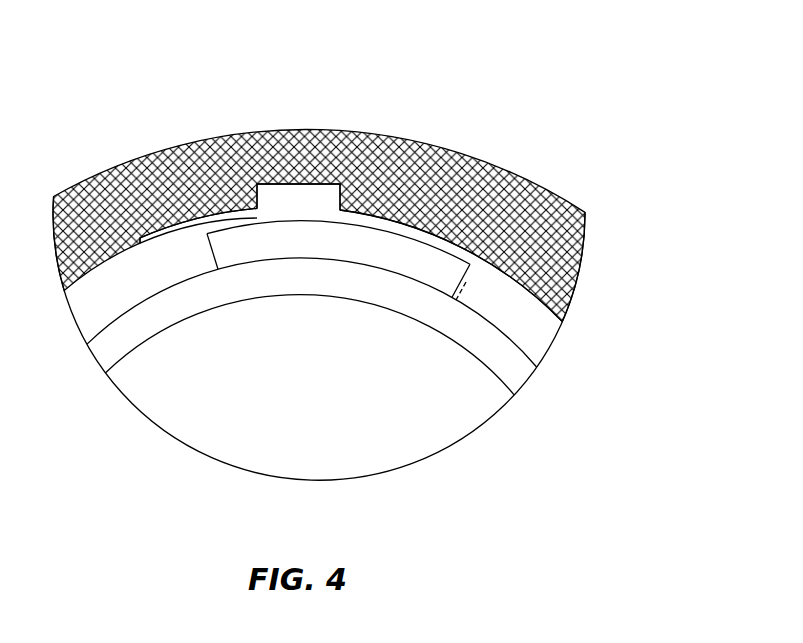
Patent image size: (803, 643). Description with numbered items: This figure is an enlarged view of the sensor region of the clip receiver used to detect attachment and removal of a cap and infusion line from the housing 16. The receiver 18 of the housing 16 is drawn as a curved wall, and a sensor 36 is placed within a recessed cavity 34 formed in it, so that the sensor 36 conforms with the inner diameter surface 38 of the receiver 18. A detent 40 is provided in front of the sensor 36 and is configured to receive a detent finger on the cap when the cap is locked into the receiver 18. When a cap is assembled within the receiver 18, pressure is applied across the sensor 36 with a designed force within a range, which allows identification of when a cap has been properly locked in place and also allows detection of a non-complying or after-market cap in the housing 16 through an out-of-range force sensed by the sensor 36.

The housing 16 is at (621, 176).
The receiver 18 is at (165, 132).
The recessed cavity 34 is at (214, 285).
The sensor 36 is at (312, 308).
The inner diameter surface 38 is at (451, 302).
The detent 40 is at (316, 273).